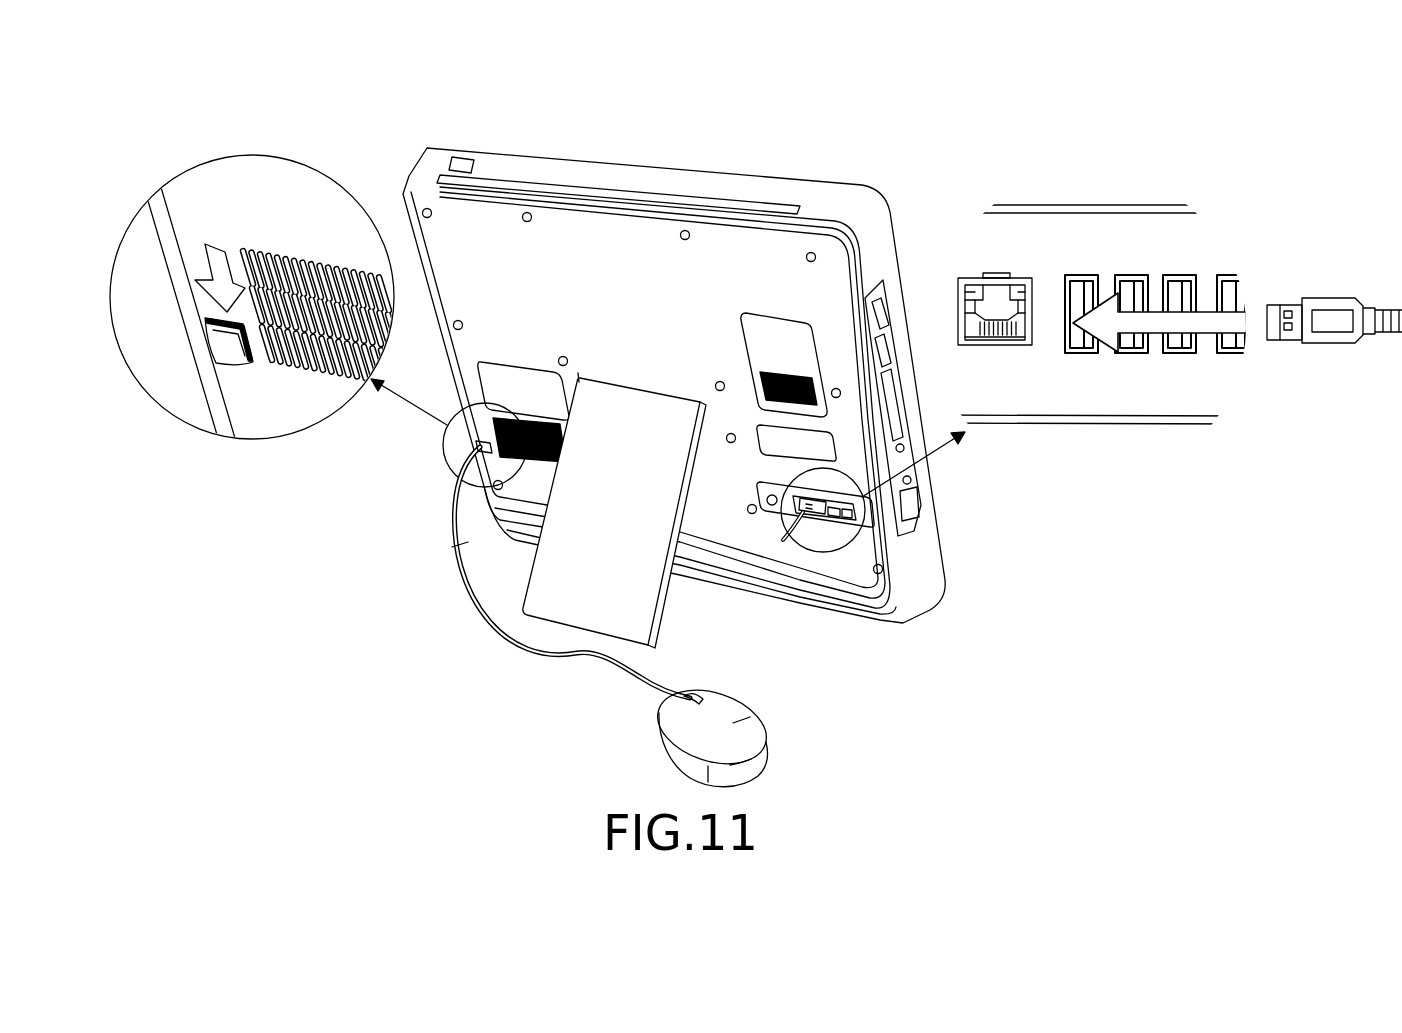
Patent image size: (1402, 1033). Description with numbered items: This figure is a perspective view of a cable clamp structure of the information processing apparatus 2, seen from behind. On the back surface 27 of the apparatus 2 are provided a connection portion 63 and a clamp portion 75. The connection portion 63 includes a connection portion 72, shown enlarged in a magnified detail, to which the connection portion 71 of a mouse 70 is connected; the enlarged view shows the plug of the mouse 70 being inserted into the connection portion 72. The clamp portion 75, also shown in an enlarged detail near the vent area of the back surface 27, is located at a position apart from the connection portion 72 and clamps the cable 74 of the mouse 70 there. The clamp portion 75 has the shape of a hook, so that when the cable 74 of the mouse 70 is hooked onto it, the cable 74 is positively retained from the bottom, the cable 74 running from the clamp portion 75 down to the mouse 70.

The information processing apparatus 2 is at (647, 153).
The back surface 27 is at (502, 350).
The connection portion 63 is at (1093, 208).
The mouse 70 is at (733, 723).
The connection portion 71 is at (1330, 325).
The connection portion 72 is at (1075, 352).
The cable 74 is at (470, 615).
The clamp portion 75 is at (233, 353).